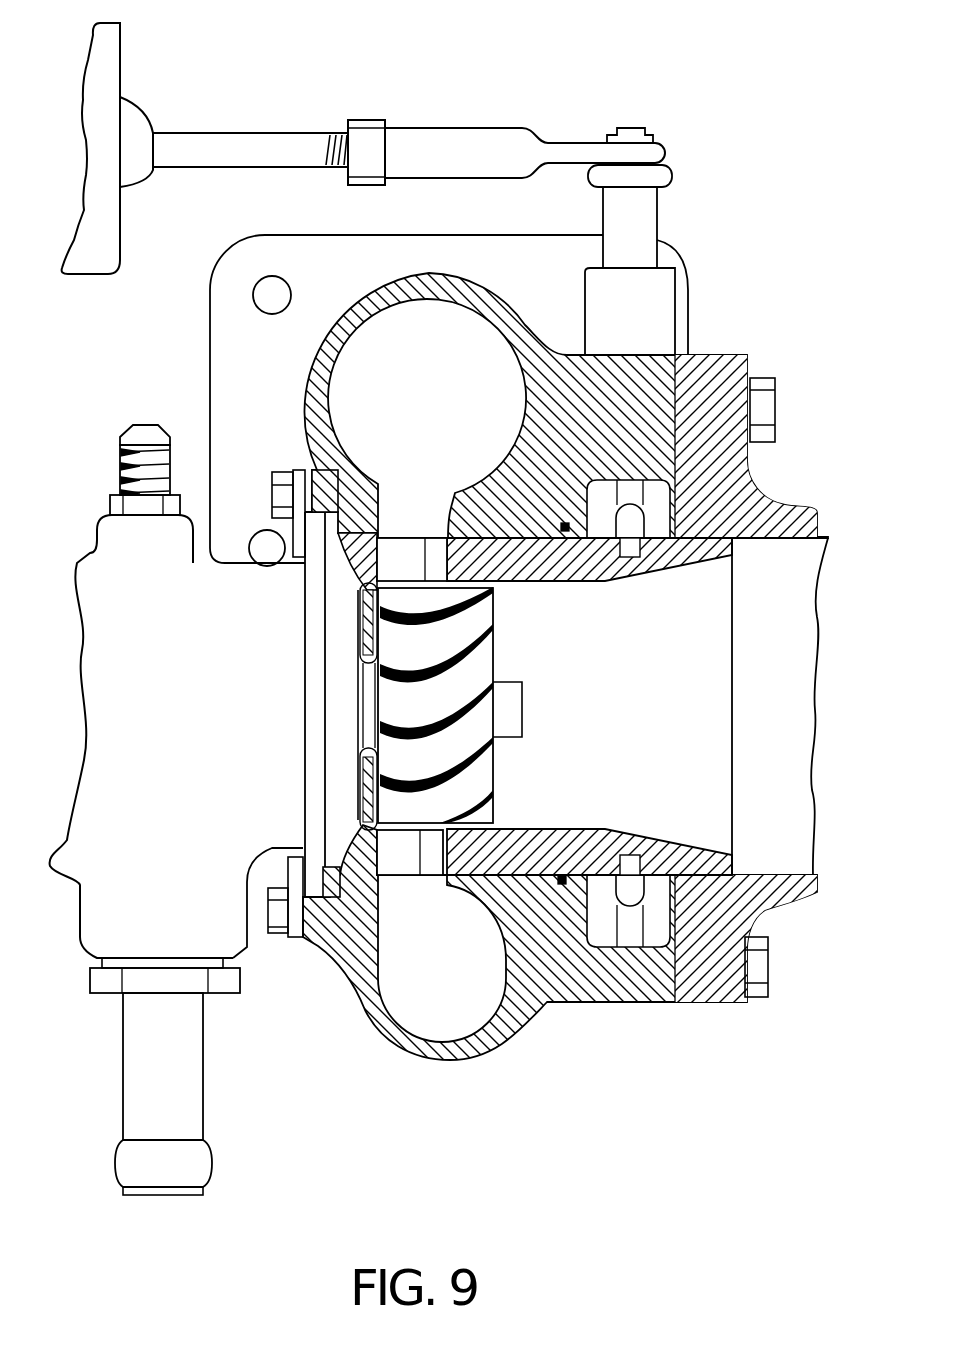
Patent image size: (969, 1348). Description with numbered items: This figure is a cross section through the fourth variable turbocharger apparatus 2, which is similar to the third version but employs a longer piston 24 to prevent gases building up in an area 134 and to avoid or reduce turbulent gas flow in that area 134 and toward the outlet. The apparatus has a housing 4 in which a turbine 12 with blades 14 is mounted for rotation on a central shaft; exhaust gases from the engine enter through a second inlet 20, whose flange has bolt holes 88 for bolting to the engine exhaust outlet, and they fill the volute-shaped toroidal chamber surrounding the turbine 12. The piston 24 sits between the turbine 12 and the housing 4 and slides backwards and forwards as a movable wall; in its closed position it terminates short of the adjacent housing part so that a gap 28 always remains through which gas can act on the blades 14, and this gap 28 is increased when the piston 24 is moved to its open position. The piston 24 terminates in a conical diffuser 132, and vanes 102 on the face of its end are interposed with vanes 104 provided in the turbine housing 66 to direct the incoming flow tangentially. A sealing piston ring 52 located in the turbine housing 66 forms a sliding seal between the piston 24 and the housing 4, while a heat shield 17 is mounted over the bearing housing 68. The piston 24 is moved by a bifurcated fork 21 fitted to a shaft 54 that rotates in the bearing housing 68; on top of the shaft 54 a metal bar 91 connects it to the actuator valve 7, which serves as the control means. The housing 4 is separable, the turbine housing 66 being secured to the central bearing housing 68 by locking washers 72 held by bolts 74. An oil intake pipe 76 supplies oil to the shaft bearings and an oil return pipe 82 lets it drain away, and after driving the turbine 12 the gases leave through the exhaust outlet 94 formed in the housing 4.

The variable turbocharger apparatus 2 is at (763, 465).
The housing 4 is at (610, 1002).
The actuator valve 7 is at (102, 220).
The turbine 12 is at (478, 705).
The blades 14 is at (467, 662).
The heat shield 17 is at (362, 560).
The second inlet 20 is at (417, 237).
The fork 21 is at (633, 522).
The piston 24 is at (528, 840).
The gap 28 is at (405, 883).
The sealing piston ring 52 is at (558, 880).
The shaft 54 is at (643, 230).
The turbine housing 66 is at (538, 1005).
The bearing housing 68 is at (117, 573).
The locking washers 72 is at (297, 930).
The bolts 74 is at (272, 925).
The oil intake pipe 76 is at (120, 442).
The oil return pipe 82 is at (187, 1103).
The bolt holes 88 is at (263, 295).
The metal bar 91 is at (663, 178).
The exhaust outlet 94 is at (778, 672).
The vanes 102 is at (437, 540).
The vanes 104 is at (395, 538).
The conical diffuser 132 is at (657, 572).
The area 134 is at (595, 520).